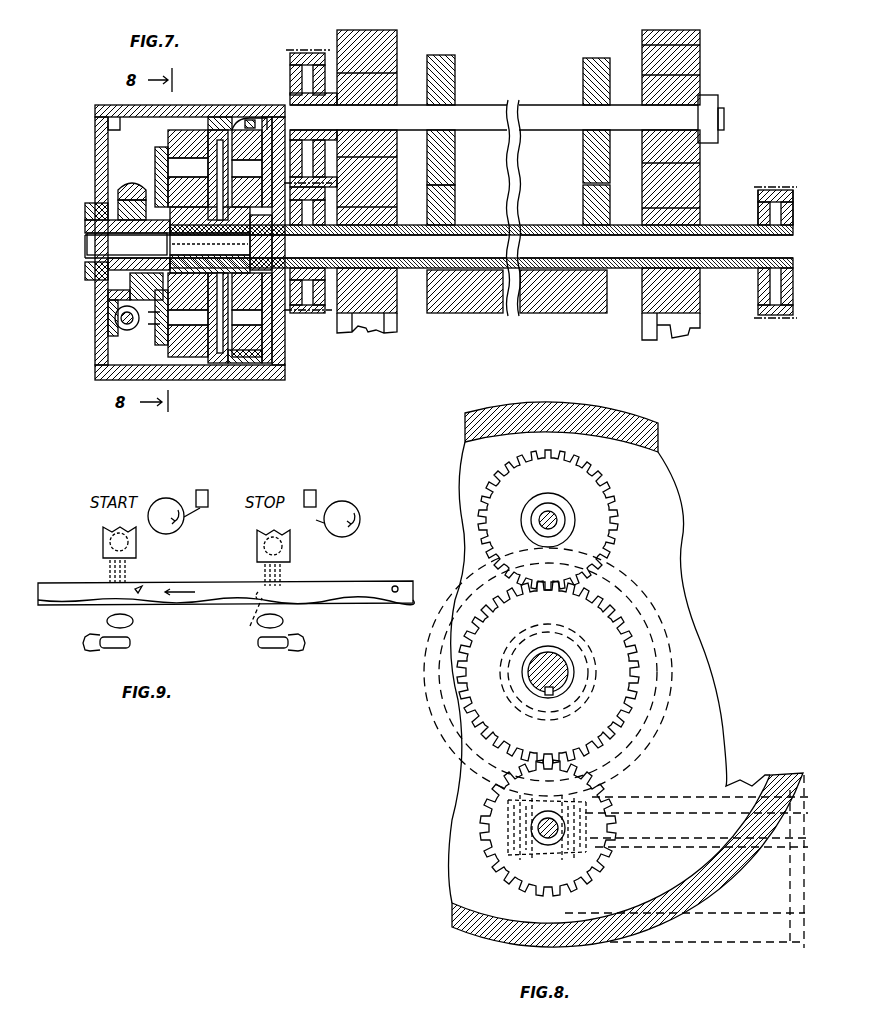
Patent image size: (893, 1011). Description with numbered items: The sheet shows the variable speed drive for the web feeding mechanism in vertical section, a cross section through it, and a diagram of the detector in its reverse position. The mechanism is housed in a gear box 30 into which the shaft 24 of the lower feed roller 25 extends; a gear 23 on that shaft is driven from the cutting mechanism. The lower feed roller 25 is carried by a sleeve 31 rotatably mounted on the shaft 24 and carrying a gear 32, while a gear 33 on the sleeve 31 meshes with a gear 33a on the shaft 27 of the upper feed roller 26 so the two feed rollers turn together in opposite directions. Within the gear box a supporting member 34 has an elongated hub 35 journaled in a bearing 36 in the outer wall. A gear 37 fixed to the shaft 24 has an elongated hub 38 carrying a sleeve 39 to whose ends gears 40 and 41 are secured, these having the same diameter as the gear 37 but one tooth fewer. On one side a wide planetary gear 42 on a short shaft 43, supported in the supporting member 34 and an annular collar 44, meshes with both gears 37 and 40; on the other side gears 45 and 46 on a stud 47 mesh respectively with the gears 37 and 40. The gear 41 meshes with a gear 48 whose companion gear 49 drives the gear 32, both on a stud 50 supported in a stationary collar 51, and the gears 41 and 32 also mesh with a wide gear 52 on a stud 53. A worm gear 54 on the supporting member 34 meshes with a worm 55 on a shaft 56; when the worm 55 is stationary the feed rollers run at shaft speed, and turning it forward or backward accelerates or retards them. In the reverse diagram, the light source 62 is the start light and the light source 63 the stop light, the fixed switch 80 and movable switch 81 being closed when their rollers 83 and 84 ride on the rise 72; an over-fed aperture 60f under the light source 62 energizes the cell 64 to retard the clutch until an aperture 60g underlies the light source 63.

In FIG. 7, the gear 23 is at (770, 320).
In FIG. 7, the shaft 24 is at (793, 240).
In FIG. 8, the shaft 24 is at (556, 676).
In FIG. 7, the lower feed roller 25 is at (538, 310).
In FIG. 7, the upper feed roller 26 is at (456, 90).
In FIG. 7, the shaft 27 is at (552, 92).
In FIG. 7, the gear box 30 is at (132, 107).
In FIG. 8, the gear box 30 is at (575, 405).
In FIG. 7, the sleeve 31 is at (408, 225).
In FIG. 7, the gear 32 is at (285, 252).
In FIG. 7, the gear 33 is at (302, 312).
In FIG. 7, the gear 33a is at (318, 50).
In FIG. 7, the supporting member 34 is at (87, 237).
In FIG. 7, the elongated hub 35 is at (85, 210).
In FIG. 7, the bearing 36 is at (88, 272).
In FIG. 7, the gear 37 is at (127, 244).
In FIG. 8, the gear 37 is at (548, 659).
In FIG. 7, the elongated hub 38 is at (210, 244).
In FIG. 8, the elongated hub 38 is at (560, 628).
In FIG. 7, the sleeve 39 is at (210, 256).
In FIG. 7, the gear 40 is at (210, 230).
In FIG. 8, the gear 40 is at (614, 630).
In FIG. 7, the gear 41 is at (255, 226).
In FIG. 7, the planetary gear 42 is at (182, 372).
In FIG. 8, the planetary gear 42 is at (603, 862).
In FIG. 7, the short shaft 43 is at (169, 315).
In FIG. 8, the short shaft 43 is at (545, 850).
In FIG. 7, the annular frame or collar 44 is at (165, 335).
In FIG. 7, the gear 45 is at (178, 130).
In FIG. 8, the gear 45 is at (604, 494).
In FIG. 7, the gear 46 is at (198, 128).
In FIG. 8, the gear 46 is at (606, 500).
In FIG. 7, the stud 47 is at (181, 168).
In FIG. 8, the stud 47 is at (548, 512).
In FIG. 7, the gear 48 is at (242, 124).
In FIG. 7, the gear 49 is at (254, 118).
In FIG. 7, the stud 50 is at (247, 168).
In FIG. 7, the stationary frame or collar 51 is at (272, 342).
In FIG. 7, the wide gear 52 is at (240, 365).
In FIG. 7, the stud 53 is at (247, 315).
In FIG. 7, the worm gear 54 is at (128, 180).
In FIG. 8, the worm gear 54 is at (664, 756).
In FIG. 7, the worm 55 is at (125, 331).
In FIG. 8, the worm 55 is at (525, 792).
In FIG. 7, the shaft 56 is at (108, 320).
In FIG. 8, the shaft 56 is at (660, 812).
In FIG. 9, the aperture 60f is at (145, 580).
In FIG. 9, the aperture 60g is at (395, 585).
In FIG. 9, the light source 62 is at (103, 540).
In FIG. 9, the light source 63 is at (257, 546).
In FIG. 9, the cell 64 is at (130, 642).
In FIG. 9, the rise 72 is at (182, 525).
In FIG. 9, the fixed switch 80 is at (210, 490).
In FIG. 9, the movable switch 81 is at (305, 490).
In FIG. 9, the roller 83 is at (200, 515).
In FIG. 9, the roller 84 is at (325, 508).